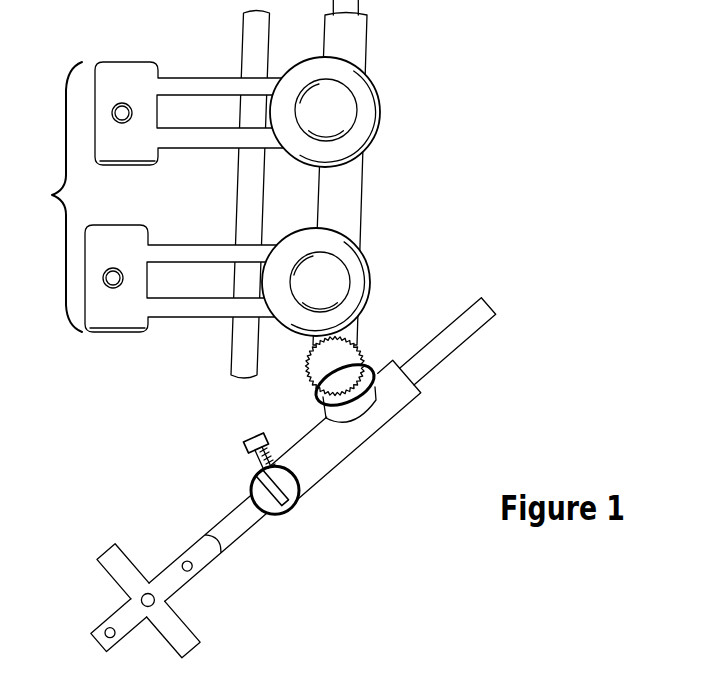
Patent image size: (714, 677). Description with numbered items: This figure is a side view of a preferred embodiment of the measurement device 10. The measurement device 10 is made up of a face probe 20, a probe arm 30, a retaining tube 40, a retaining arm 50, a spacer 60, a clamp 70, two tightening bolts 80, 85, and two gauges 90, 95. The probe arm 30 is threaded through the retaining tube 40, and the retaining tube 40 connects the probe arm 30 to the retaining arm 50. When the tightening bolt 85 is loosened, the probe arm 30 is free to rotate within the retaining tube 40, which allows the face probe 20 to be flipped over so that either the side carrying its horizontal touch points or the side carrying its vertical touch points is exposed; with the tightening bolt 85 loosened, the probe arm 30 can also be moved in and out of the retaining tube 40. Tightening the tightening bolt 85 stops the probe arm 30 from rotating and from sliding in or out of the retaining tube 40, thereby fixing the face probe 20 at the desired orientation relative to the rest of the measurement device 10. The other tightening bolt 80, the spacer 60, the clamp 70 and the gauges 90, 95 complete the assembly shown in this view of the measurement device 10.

The measurement device 10 is at (410, 176).
The face probe 20 is at (106, 602).
The probe arm 30 is at (238, 527).
The retaining tube 40 is at (397, 405).
The retaining arm 50 is at (363, 38).
The spacer 60 is at (250, 33).
The clamp 70 is at (198, 196).
The tightening bolt 80 is at (367, 352).
The tightening bolt 85 is at (253, 437).
The gauge 90 is at (300, 500).
The gauge 95 is at (318, 393).